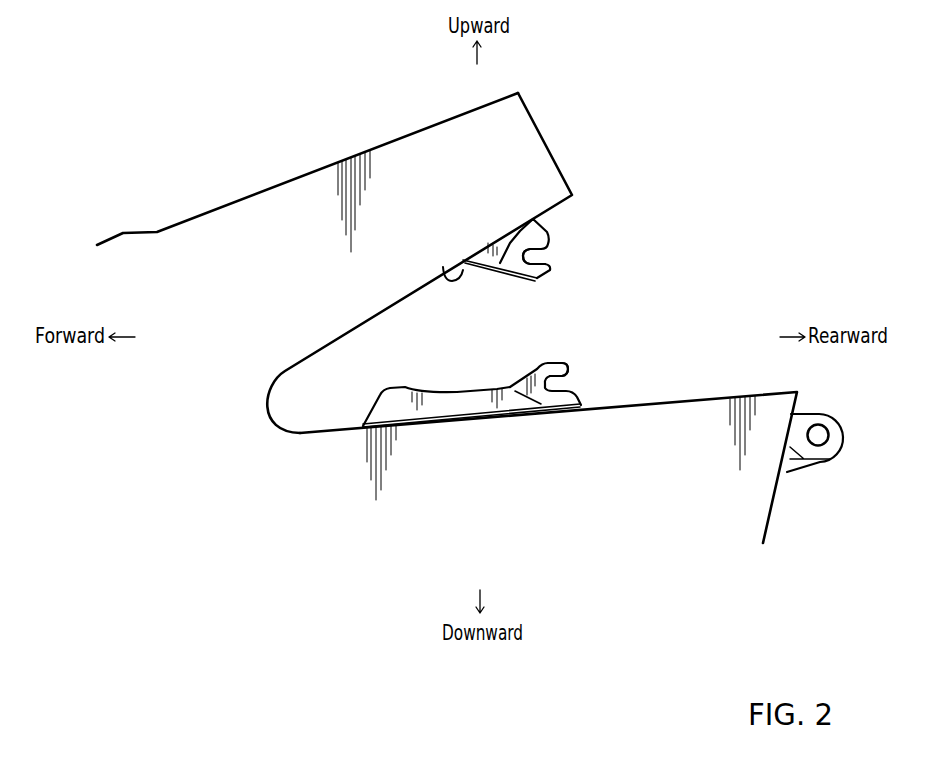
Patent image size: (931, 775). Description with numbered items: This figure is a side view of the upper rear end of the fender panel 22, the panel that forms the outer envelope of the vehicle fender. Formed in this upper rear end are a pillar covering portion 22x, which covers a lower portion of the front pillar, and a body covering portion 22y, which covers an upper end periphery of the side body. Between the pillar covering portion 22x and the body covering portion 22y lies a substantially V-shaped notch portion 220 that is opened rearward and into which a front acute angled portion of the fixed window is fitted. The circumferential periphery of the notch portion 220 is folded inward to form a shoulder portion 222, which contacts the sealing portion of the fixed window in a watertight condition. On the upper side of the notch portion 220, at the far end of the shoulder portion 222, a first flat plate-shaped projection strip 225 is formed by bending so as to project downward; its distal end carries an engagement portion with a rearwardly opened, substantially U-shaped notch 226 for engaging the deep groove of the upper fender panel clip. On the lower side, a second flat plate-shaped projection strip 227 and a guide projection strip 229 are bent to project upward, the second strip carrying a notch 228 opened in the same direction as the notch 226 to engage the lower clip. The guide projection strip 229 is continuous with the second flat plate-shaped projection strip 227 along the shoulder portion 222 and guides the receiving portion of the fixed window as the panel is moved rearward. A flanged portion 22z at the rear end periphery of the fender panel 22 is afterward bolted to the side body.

The fender panel 22 is at (223, 199).
The pillar covering portion 22x is at (487, 175).
The body covering portion 22y is at (631, 417).
The flanged portion 22z is at (803, 447).
The notch portion 220 is at (421, 292).
The shoulder portion 222 is at (467, 263).
The first flat plate-shaped projection strip 225 is at (556, 232).
The notch 226 is at (541, 253).
The second flat plate-shaped projection strip 227 is at (546, 361).
The notch 228 is at (552, 380).
The guide projection strip 229 is at (395, 400).